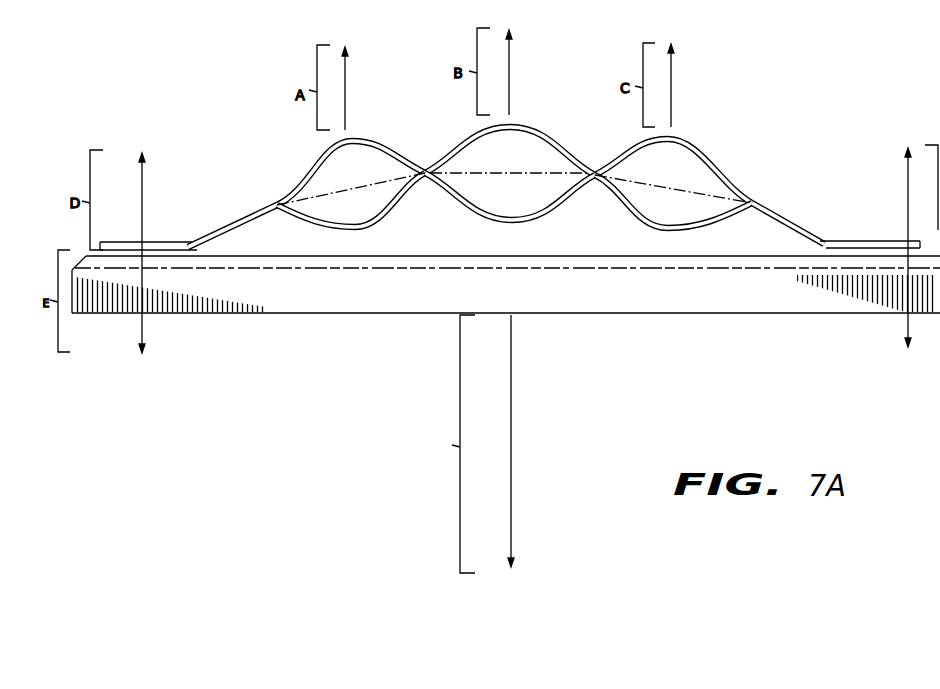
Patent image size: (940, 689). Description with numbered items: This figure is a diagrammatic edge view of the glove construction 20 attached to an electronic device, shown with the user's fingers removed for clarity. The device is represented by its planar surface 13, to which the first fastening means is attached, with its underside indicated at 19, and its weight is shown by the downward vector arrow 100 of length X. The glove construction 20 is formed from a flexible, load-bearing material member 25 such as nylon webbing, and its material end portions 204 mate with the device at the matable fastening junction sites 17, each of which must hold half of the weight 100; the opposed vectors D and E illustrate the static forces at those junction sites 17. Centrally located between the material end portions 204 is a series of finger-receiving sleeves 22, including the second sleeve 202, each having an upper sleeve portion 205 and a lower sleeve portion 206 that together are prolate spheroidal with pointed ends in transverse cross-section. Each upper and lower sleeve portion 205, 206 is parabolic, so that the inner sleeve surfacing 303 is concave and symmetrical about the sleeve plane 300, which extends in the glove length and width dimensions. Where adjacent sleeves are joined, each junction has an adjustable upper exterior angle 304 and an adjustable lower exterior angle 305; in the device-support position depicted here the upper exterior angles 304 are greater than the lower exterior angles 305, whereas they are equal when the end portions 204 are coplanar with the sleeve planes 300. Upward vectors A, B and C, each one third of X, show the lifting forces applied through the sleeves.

The planar surface 13 is at (730, 237).
The matable fastening junction site 17 is at (148, 236).
The bottom surface of base plate 19 is at (90, 320).
The glove construction 20 is at (506, 197).
The finger-receiving sleeve 22 is at (307, 161).
The flexible load-bearing material member 25 is at (757, 197).
The device weight vector arrow 100 is at (512, 440).
The second finger-receiving sleeve 202 is at (720, 173).
The material end portion 204 is at (120, 240).
The upper sleeve portion 205 is at (717, 143).
The lower sleeve portion 206 is at (695, 231).
The sleeve plane 300 is at (355, 187).
The inner sleeve surfacing 303 is at (290, 180).
The adjustable upper exterior angle 304 is at (418, 160).
The adjustable lower exterior angle 305 is at (430, 192).